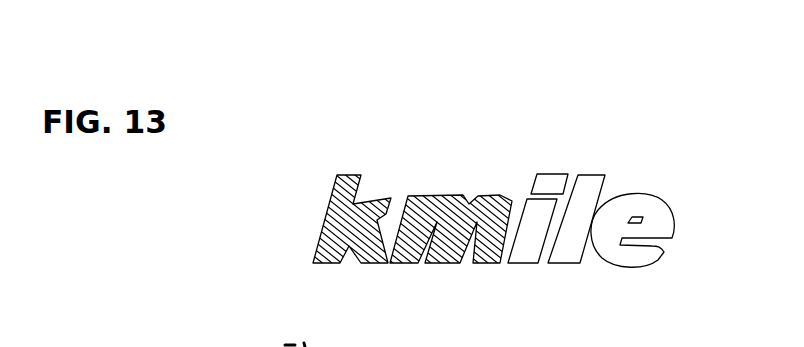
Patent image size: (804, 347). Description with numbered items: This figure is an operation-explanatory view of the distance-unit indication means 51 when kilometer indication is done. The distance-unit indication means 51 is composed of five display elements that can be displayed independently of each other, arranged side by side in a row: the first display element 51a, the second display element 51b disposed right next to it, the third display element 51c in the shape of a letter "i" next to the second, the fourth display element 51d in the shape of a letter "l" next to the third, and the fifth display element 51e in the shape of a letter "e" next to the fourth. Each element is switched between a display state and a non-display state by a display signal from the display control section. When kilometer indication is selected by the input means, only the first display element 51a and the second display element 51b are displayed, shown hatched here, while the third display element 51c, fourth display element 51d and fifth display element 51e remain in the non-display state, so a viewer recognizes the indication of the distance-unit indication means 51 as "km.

The distance-unit indication means 51 is at (323, 137).
The first display element 51a is at (358, 177).
The second display element 51b is at (452, 197).
The third display element 51c is at (553, 180).
The fourth display element 51d is at (590, 182).
The fifth display element 51e is at (638, 200).